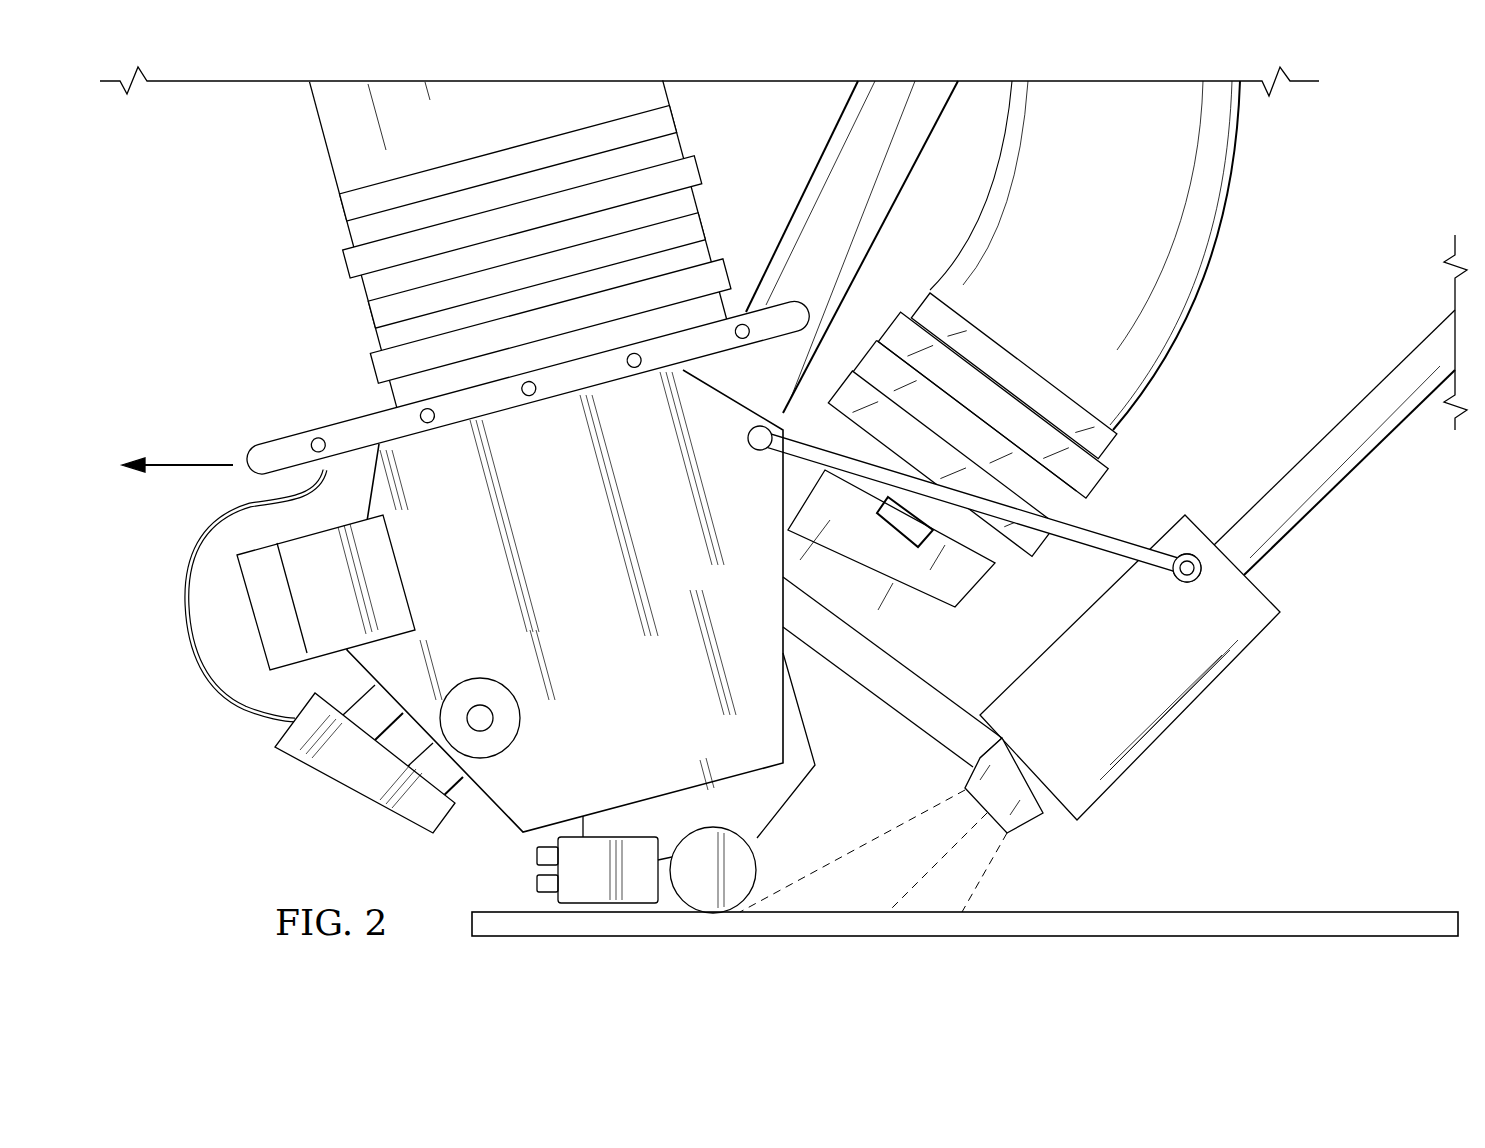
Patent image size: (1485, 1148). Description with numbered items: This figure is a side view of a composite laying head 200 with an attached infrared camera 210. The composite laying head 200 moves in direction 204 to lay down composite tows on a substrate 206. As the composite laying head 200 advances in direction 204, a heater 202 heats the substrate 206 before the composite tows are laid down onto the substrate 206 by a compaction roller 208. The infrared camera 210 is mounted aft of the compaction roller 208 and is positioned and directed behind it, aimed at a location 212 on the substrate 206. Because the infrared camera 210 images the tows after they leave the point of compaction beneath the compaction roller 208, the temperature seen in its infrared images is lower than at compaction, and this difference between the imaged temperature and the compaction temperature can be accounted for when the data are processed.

The composite laying head 200 is at (342, 413).
The heater 202 is at (537, 855).
The direction 204 is at (183, 463).
The substrate 206 is at (1140, 911).
The compaction roller 208 is at (758, 860).
The infrared camera 210 is at (1182, 716).
The location 212 is at (894, 830).